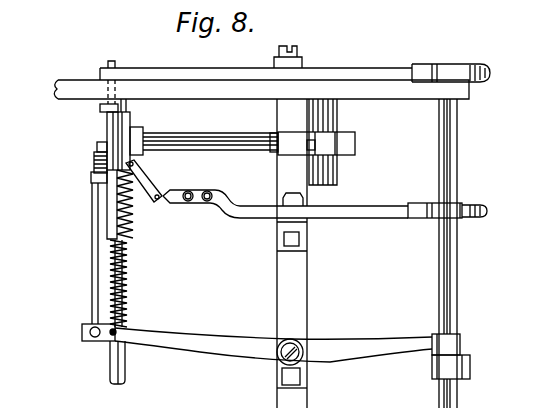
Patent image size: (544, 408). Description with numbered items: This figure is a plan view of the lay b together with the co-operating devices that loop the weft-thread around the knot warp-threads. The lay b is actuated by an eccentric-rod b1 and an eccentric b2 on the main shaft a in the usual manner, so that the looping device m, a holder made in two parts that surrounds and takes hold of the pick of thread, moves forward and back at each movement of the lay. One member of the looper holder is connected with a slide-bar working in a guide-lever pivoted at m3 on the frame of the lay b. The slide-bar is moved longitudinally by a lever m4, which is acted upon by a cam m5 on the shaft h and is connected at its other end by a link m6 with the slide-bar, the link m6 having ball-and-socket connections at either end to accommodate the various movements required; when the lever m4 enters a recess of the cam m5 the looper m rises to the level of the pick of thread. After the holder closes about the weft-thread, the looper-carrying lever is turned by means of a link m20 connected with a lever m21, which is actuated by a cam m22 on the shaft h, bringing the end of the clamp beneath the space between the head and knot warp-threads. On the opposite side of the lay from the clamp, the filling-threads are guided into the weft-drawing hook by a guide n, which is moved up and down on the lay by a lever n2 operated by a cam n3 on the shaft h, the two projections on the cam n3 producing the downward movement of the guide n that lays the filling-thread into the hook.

The lever n2 is at (197, 70).
The cam n3 is at (457, 70).
The guide n is at (100, 109).
The lay b is at (107, 128).
The eccentric-rod b1 is at (213, 141).
The eccentric b2 is at (351, 130).
The main shaft a is at (339, 174).
The shaft h is at (437, 158).
The looping device m is at (94, 161).
The pivot m3 is at (97, 147).
The lever m4 is at (362, 208).
The cam m5 is at (475, 201).
The link m6 is at (152, 189).
The link m20 is at (92, 226).
The lever m21 is at (343, 342).
The cam m22 is at (468, 352).